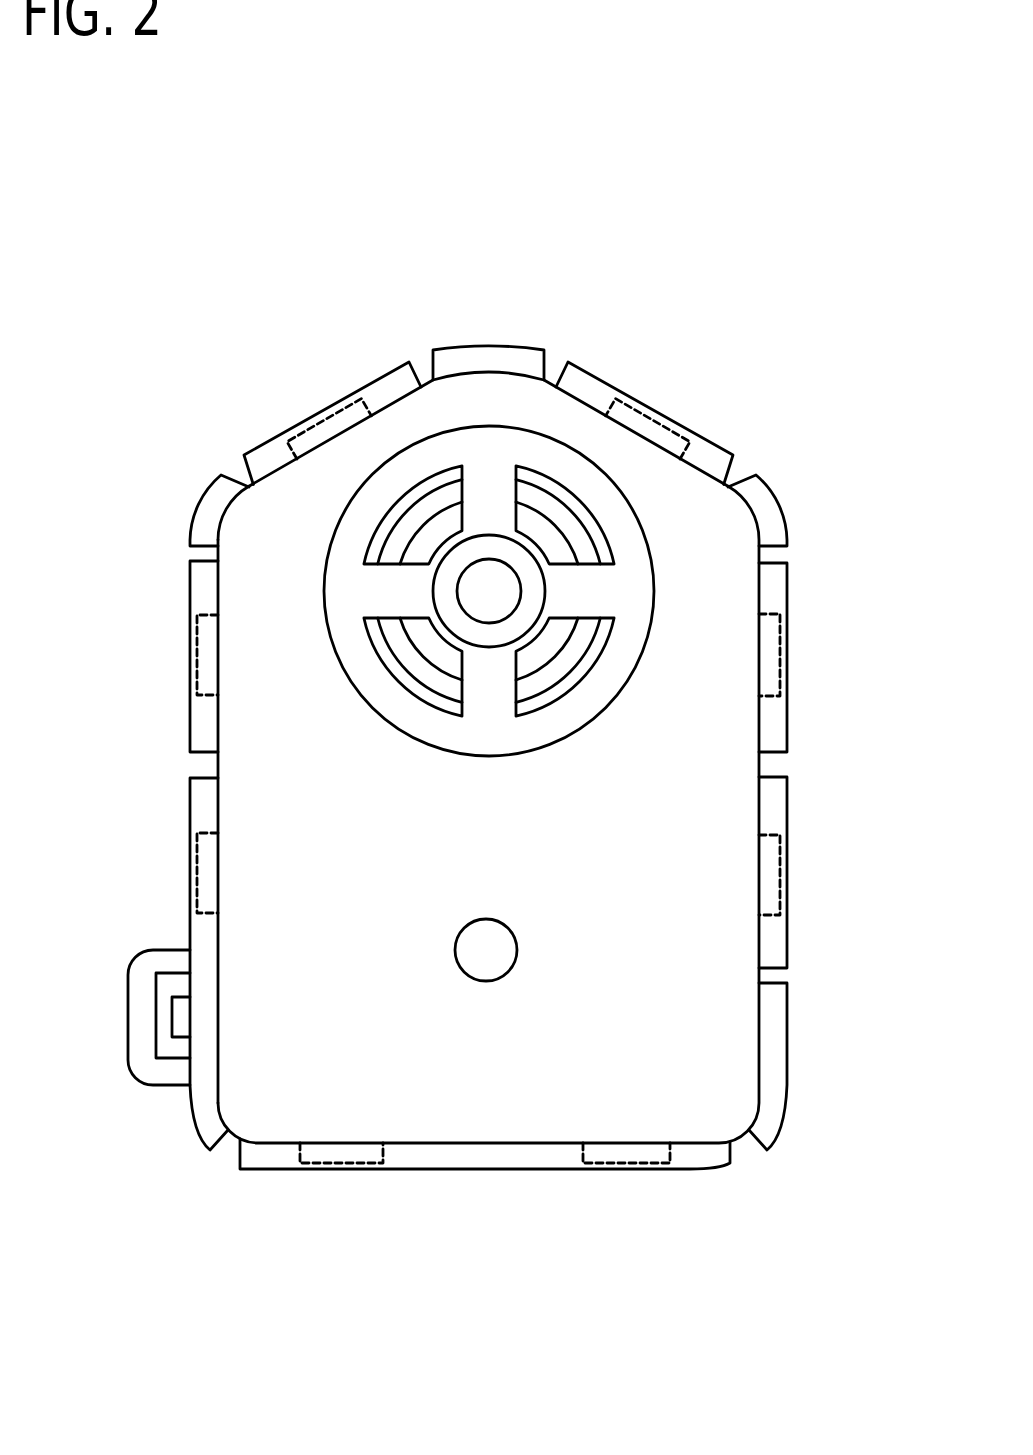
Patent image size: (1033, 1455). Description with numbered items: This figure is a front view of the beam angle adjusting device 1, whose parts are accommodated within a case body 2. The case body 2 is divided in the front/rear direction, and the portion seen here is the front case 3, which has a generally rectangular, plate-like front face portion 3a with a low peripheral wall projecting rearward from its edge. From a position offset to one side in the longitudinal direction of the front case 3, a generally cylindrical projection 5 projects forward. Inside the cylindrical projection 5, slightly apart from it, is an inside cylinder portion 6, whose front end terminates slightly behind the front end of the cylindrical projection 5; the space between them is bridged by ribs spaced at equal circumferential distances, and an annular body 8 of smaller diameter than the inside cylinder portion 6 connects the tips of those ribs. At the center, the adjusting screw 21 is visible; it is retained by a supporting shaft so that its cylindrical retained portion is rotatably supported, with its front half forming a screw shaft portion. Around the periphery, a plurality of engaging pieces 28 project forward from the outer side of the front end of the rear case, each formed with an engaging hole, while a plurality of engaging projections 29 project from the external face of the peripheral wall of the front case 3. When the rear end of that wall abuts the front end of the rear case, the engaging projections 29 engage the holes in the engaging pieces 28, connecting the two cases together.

The beam angle adjusting device 1 is at (460, 262).
The case body 2 is at (563, 413).
The front case 3 is at (722, 895).
The front face portion 3a is at (237, 804).
The cylindrical projection 5 is at (568, 723).
The inside cylinder portion 6 is at (438, 685).
The annular body 8 is at (423, 643).
The adjusting screw 21 is at (485, 613).
The engaging pieces 28 is at (263, 452).
The engaging projections 29 is at (383, 364).